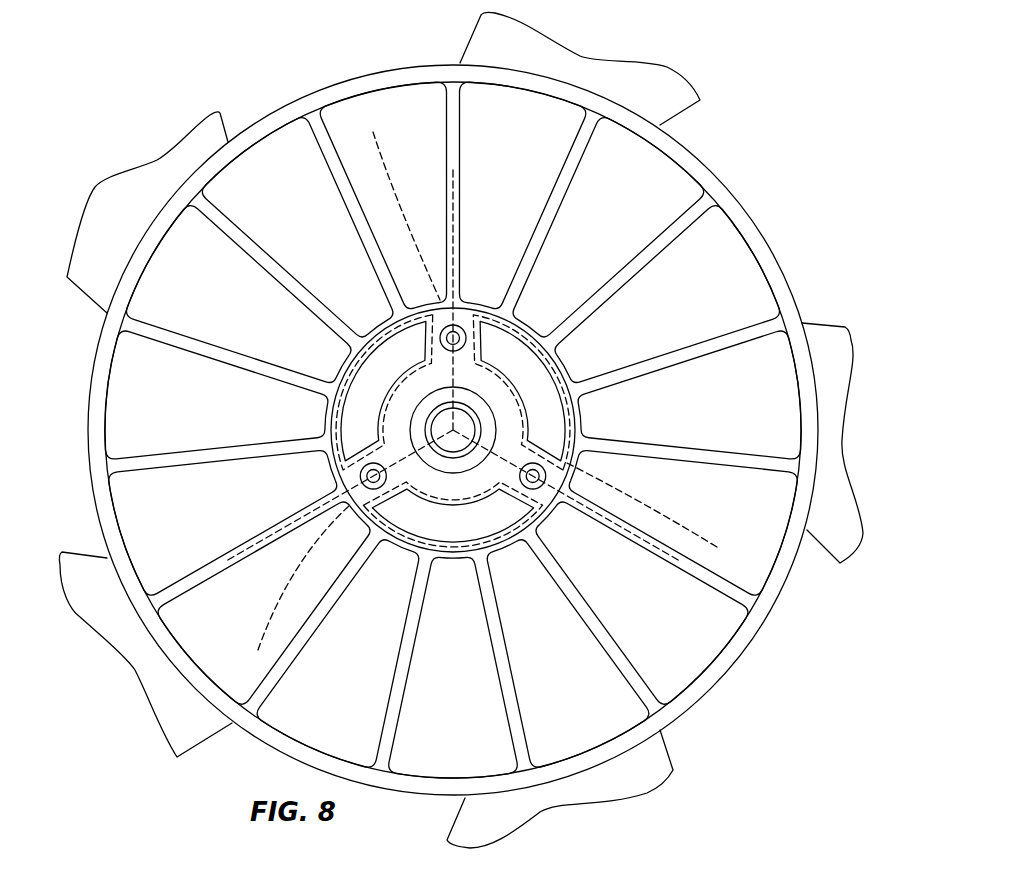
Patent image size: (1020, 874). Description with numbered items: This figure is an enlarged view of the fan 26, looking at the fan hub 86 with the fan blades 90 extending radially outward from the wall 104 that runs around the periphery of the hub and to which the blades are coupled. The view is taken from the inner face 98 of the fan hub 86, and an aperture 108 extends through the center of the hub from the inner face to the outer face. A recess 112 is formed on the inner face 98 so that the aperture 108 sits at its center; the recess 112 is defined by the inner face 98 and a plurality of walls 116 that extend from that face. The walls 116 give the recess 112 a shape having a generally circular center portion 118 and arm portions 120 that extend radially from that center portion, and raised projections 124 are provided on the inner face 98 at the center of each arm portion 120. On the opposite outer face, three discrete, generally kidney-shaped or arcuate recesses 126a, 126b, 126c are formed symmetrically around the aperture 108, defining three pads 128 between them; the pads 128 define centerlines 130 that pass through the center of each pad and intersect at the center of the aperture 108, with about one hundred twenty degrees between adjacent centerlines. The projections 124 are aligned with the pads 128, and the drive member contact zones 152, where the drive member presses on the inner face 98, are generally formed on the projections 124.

The fan 26 is at (484, 430).
The fan hub 86 is at (459, 411).
The fan blades 90 is at (468, 43).
The inner face 98 is at (386, 103).
The wall 104 is at (263, 115).
The aperture 108 is at (466, 418).
The recess 112 is at (453, 403).
The walls 116 is at (451, 424).
The generally circular center portion 118 is at (487, 447).
The arm portions 120 is at (440, 305).
The raised projections 124 is at (467, 325).
The recess 126a is at (340, 353).
The recess 126b is at (400, 542).
The recess 126c is at (575, 432).
The pads 128 is at (486, 391).
The centerlines 130 is at (447, 207).
The drive member contact zones 152 is at (497, 312).